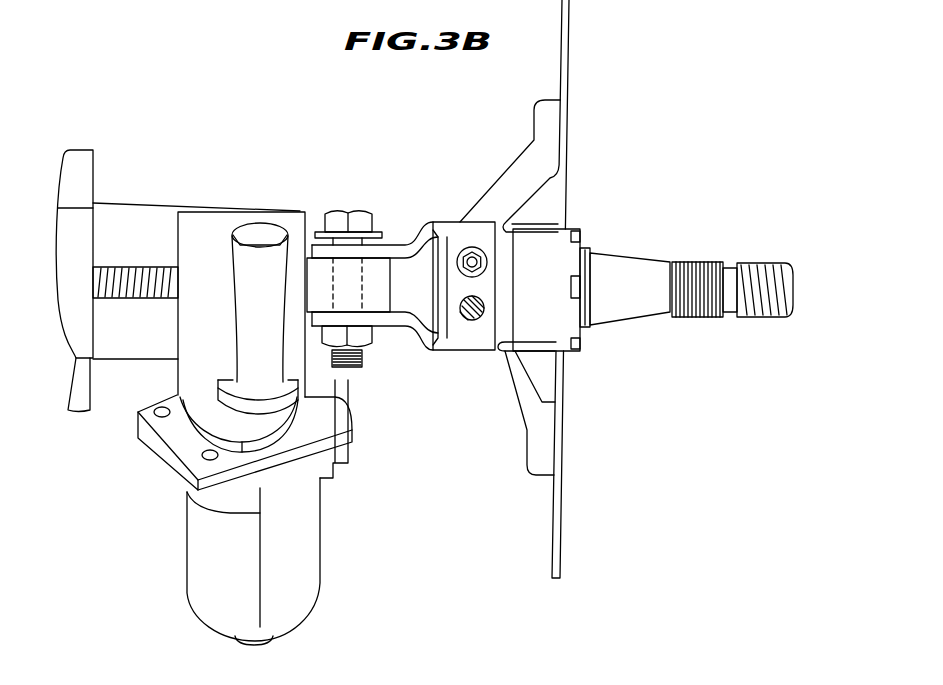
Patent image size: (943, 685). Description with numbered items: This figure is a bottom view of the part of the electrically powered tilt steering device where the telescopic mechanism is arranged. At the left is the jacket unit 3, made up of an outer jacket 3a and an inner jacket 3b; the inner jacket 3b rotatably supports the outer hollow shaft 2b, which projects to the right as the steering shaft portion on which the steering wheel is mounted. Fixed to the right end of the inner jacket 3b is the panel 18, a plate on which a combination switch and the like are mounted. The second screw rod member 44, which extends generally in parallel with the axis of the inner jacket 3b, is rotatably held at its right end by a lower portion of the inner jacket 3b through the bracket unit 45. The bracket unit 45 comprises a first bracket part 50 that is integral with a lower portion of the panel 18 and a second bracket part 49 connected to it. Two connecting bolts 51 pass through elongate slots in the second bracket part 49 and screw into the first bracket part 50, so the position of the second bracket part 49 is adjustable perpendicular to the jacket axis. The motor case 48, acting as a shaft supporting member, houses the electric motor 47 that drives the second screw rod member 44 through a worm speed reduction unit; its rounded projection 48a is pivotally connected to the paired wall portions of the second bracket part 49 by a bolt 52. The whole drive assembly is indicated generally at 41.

The jacket unit 3 is at (178, 226).
The outer jacket 3a is at (78, 160).
The inner jacket 3b is at (128, 210).
The panel 18 is at (568, 53).
The outer hollow shaft 2b is at (639, 262).
The tilt drive unit 41 is at (306, 168).
The second screw rod member 44 is at (130, 285).
The bracket unit 45 is at (477, 327).
The electric motor 47 is at (298, 584).
The motor case 48 is at (180, 443).
The rounded projection 48a is at (378, 298).
The second bracket part 49 is at (537, 327).
The first bracket part 50 is at (432, 282).
The connecting bolts 51 is at (471, 248).
The bolt 52 is at (358, 217).